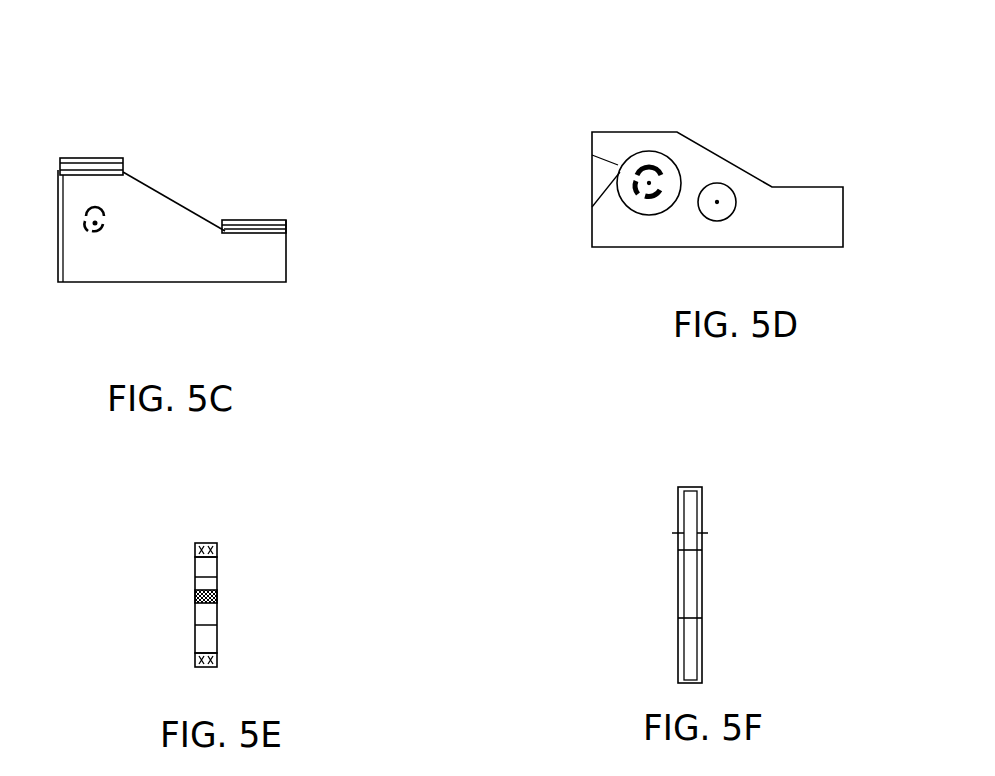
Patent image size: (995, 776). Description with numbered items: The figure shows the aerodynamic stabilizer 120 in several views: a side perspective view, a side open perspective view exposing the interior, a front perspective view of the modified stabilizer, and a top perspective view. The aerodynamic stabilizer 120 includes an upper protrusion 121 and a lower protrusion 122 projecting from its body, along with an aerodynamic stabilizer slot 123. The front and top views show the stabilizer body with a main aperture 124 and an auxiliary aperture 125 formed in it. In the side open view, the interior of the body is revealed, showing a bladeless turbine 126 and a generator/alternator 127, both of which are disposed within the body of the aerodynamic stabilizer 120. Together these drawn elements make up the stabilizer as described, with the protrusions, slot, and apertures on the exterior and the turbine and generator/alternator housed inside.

In FIG. 5C, the aerodynamic stabilizer 120 is at (173, 235).
In FIG. 5D, the aerodynamic stabilizer 120 is at (810, 215).
In FIG. 5F, the aerodynamic stabilizer 120 is at (678, 590).
In FIG. 5C, the upper protrusion 121 is at (79, 160).
In FIG. 5E, the upper protrusion 121 is at (195, 549).
In FIG. 5F, the upper protrusion 121 is at (690, 512).
In FIG. 5C, the lower protrusion 122 is at (270, 221).
In FIG. 5F, the lower protrusion 122 is at (695, 655).
In FIG. 5E, the aerodynamic stabilizer slot 123 is at (195, 655).
In FIG. 5E, the main aperture 124 is at (208, 612).
In FIG. 5D, the auxiliary aperture 125 is at (617, 165).
In FIG. 5E, the auxiliary aperture 125 is at (217, 592).
In FIG. 5D, the bladeless turbine 126 is at (649, 192).
In FIG. 5D, the generator/alternator 127 is at (716, 193).